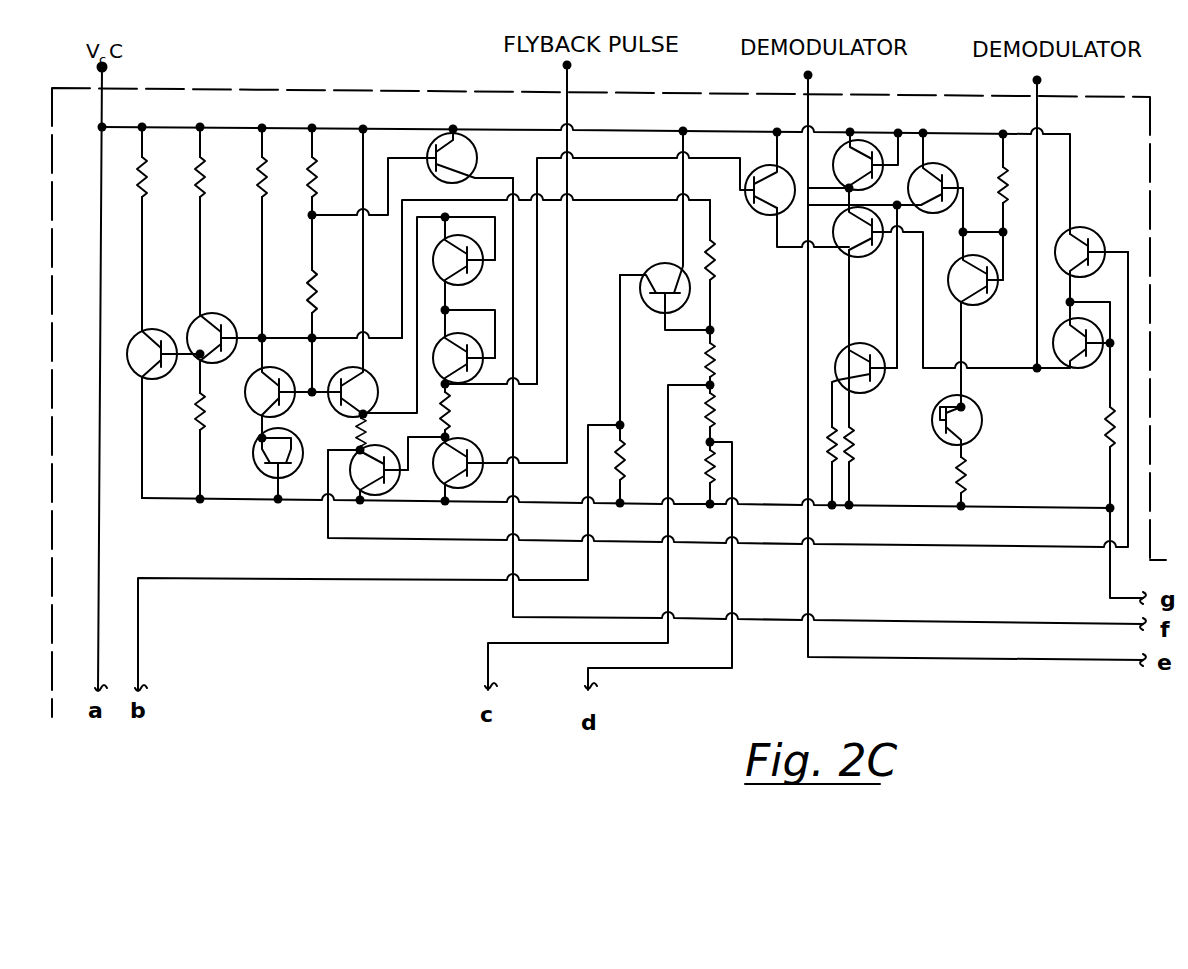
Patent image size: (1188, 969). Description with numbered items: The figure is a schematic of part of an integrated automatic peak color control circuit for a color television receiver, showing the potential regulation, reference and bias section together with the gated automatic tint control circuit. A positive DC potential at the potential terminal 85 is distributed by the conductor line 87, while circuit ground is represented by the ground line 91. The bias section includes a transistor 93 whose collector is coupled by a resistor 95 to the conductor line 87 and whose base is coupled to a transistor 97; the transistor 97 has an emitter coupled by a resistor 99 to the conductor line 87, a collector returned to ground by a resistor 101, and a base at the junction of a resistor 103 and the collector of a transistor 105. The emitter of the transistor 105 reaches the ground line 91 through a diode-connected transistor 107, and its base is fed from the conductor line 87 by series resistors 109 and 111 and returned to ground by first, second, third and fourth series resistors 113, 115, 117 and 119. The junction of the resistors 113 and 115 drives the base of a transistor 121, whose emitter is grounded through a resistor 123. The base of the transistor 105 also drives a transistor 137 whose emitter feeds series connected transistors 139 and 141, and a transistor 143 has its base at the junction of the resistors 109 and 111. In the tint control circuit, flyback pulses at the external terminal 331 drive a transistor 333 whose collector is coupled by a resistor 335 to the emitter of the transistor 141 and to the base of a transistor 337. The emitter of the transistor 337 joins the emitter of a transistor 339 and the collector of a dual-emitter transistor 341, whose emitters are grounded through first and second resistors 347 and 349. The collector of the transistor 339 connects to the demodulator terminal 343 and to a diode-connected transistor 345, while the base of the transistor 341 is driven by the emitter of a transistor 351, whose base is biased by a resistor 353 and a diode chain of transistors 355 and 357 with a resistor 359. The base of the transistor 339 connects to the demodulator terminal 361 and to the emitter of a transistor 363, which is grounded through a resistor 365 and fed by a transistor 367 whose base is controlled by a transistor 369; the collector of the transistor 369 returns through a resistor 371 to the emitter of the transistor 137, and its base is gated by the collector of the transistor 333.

The potential terminal 85 is at (108, 70).
The conductor line 87 is at (175, 125).
The ground line 91 is at (1041, 506).
The transistor 93 is at (167, 336).
The resistor 95 is at (147, 172).
The transistor 97 is at (224, 314).
The resistor 99 is at (205, 172).
The resistor 101 is at (197, 422).
The resistor 103 is at (267, 182).
The transistor 105 is at (204, 426).
The diode-connected transistor 107 is at (252, 456).
The resistor 109 is at (312, 287).
The resistor 111 is at (316, 172).
The first resistor 113 is at (715, 258).
The second resistor 115 is at (715, 350).
The third resistor 117 is at (715, 400).
The fourth resistor 119 is at (715, 462).
The transistor 121 is at (646, 273).
The resistor 123 is at (626, 463).
The transistor 137 is at (362, 410).
The transistor 139 is at (480, 274).
The transistor 141 is at (479, 381).
The transistor 143 is at (478, 176).
The external terminal 331 is at (573, 68).
The transistor 333 is at (462, 489).
The resistor 335 is at (447, 418).
The transistor 337 is at (738, 218).
The transistor 339 is at (846, 256).
The dual-emitter transistor 341 is at (884, 388).
The external terminal 343 is at (813, 77).
The diode-connected transistor 345 is at (871, 144).
The first resistor 347 is at (827, 436).
The second resistor 349 is at (873, 440).
The transistor 351 is at (936, 160).
The resistor 353 is at (997, 188).
The transistor 355 is at (984, 306).
The transistor 357 is at (982, 420).
The resistor 359 is at (960, 477).
The external terminal 361 is at (1043, 80).
The transistor 363 is at (1080, 370).
The resistor 365 is at (1106, 438).
The transistor 367 is at (1097, 234).
The transistor 369 is at (372, 497).
The resistor 371 is at (355, 431).